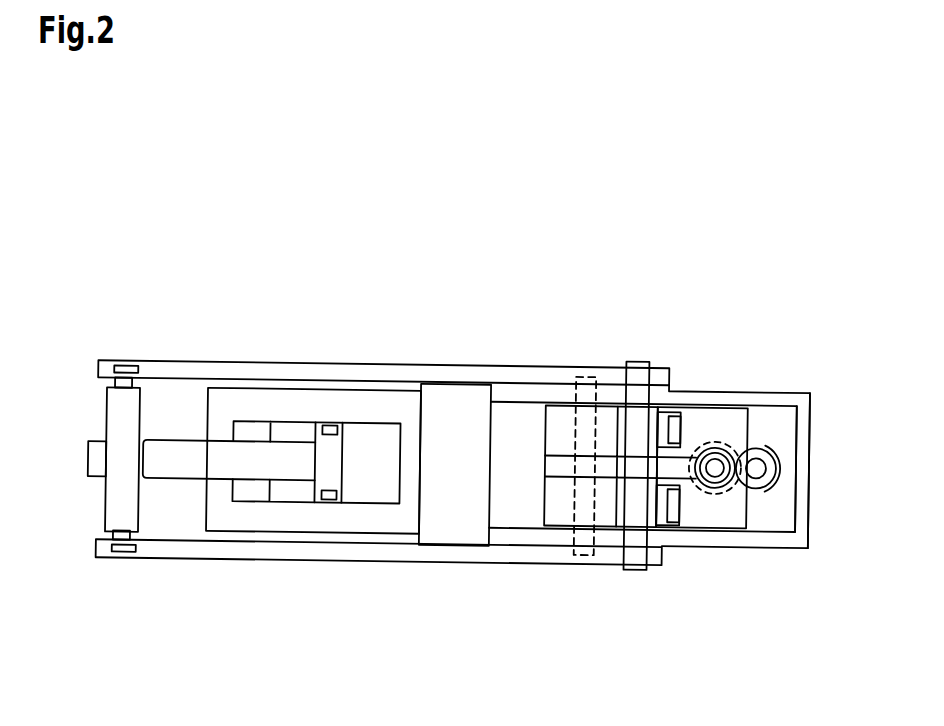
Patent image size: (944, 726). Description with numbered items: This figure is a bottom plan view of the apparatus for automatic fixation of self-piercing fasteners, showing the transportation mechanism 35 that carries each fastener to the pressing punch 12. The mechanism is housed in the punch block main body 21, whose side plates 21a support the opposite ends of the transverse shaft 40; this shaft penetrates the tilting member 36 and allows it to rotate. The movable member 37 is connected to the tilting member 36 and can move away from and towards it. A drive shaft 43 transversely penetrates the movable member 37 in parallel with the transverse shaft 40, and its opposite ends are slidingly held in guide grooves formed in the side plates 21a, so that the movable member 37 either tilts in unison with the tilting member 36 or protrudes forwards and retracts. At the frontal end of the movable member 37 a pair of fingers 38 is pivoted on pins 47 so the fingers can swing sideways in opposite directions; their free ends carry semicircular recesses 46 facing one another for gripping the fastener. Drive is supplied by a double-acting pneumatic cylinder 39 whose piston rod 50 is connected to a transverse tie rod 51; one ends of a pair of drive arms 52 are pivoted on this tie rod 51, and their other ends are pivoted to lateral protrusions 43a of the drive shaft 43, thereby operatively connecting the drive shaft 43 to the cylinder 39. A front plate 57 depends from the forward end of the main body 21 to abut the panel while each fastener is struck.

The pressing punch 12 is at (780, 468).
The punch block main body 21 is at (455, 389).
The side plates 21a is at (683, 386).
The transportation mechanism 35 is at (468, 563).
The tilting member 36 is at (557, 504).
The movable member 37 is at (620, 536).
The fingers 38 is at (721, 410).
The pneumatic cylinder 39 is at (287, 520).
The transverse shaft 40 is at (575, 554).
The drive shaft 43 is at (660, 560).
The lateral protrusions 43a is at (630, 360).
The recesses 46 is at (737, 435).
The pins 47 is at (682, 422).
The piston rod 50 is at (170, 470).
The tie rod 51 is at (120, 410).
The drive arms 52 is at (303, 368).
The front plate 57 is at (800, 426).